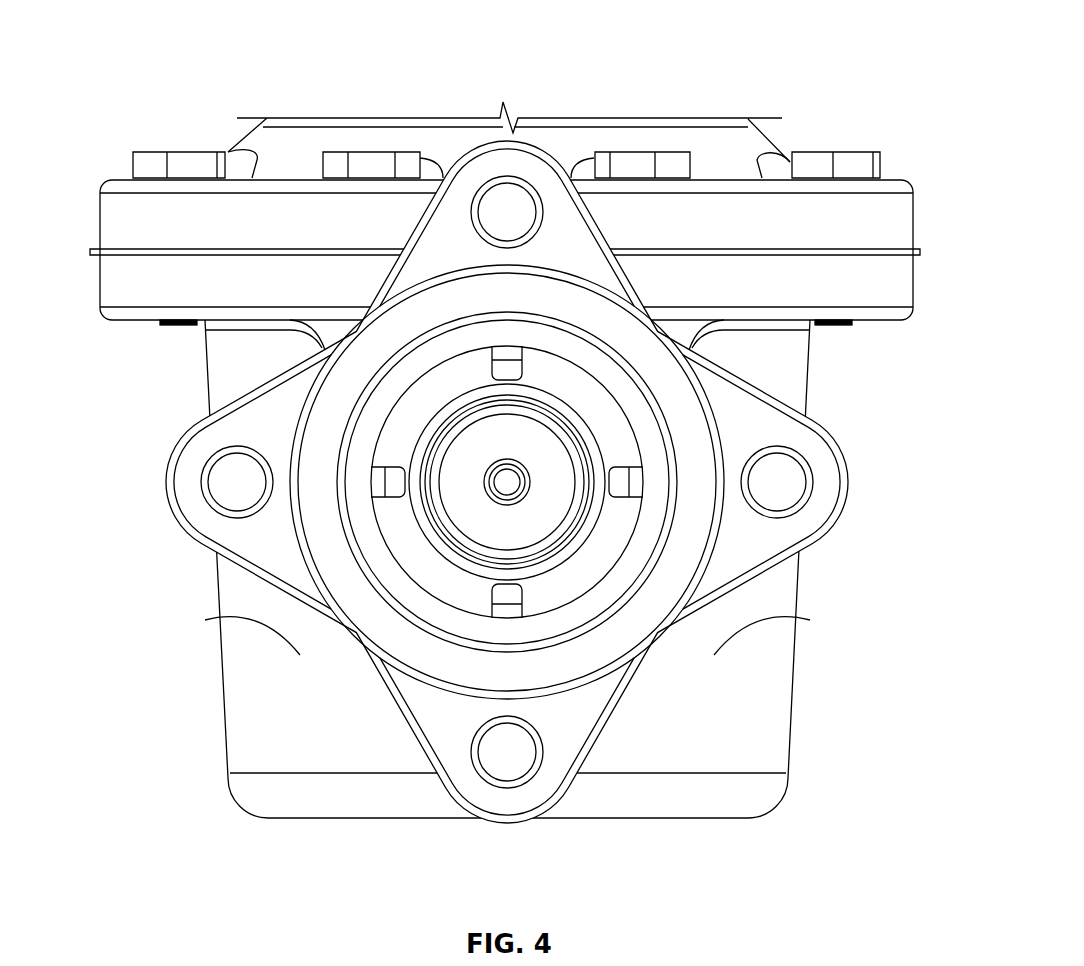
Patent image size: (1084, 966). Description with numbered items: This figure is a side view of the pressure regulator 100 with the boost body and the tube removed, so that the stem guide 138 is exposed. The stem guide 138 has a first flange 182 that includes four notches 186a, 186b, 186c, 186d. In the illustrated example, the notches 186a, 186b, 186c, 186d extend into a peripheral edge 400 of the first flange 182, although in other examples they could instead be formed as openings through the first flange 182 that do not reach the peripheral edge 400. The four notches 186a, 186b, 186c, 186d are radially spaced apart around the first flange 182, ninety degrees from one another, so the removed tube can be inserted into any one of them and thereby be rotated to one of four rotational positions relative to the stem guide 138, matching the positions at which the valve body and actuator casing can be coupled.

The pressure regulator 100 is at (501, 449).
The notch 186a is at (503, 345).
The notch 186b is at (366, 482).
The notch 186c is at (478, 608).
The notch 186d is at (645, 478).
The peripheral edge 400 is at (373, 522).
The stem guide 138 is at (319, 563).
The first flange 182 is at (420, 563).